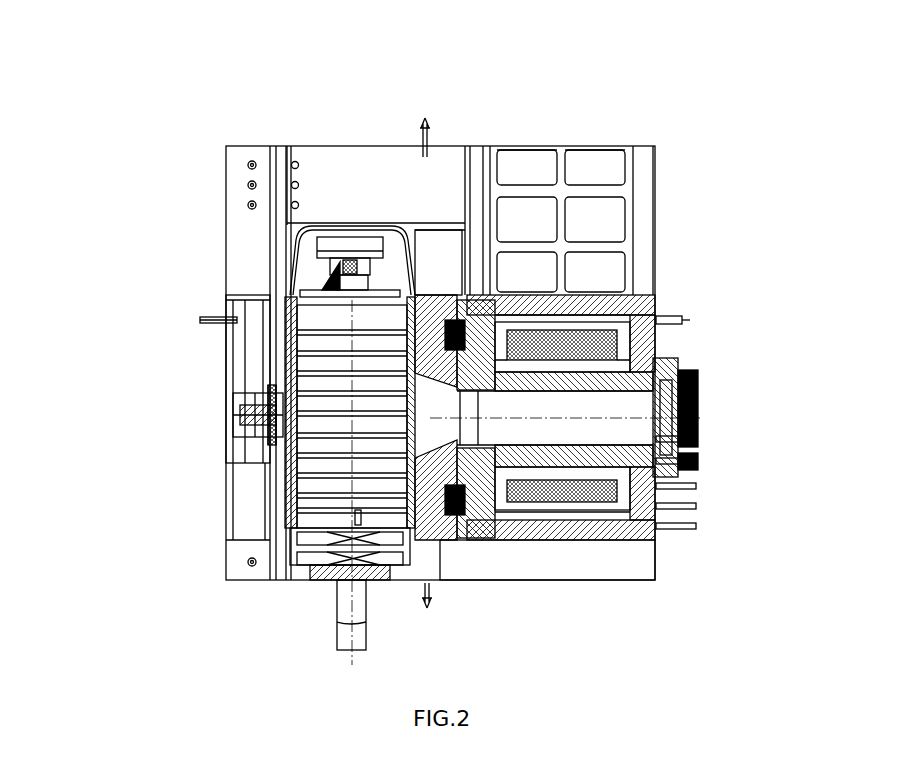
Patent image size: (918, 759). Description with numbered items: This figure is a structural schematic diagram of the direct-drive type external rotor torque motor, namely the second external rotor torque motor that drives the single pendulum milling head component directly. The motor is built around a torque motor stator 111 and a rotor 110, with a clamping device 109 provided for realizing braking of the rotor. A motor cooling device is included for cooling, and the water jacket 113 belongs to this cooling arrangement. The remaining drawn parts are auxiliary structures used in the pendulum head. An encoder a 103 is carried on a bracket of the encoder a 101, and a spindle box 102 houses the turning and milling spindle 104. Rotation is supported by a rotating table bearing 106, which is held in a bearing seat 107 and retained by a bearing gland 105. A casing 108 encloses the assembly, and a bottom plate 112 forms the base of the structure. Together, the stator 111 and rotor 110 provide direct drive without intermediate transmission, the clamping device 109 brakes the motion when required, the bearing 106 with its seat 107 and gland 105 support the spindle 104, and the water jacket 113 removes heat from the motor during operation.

The bracket of the encoder a 101 is at (262, 527).
The spindle box 102 is at (265, 472).
The encoder a 103 is at (224, 322).
The turning and milling spindle 104 is at (297, 298).
The bearing gland 105 is at (378, 242).
The rotating table bearing 106 is at (445, 298).
The bearing seat 107 is at (468, 298).
The casing 108 is at (513, 310).
The clamping device 109 is at (522, 312).
The rotor 110 is at (585, 307).
The torque motor stator 111 is at (627, 300).
The bottom plate 112 is at (657, 313).
The water jacket 113 is at (657, 318).